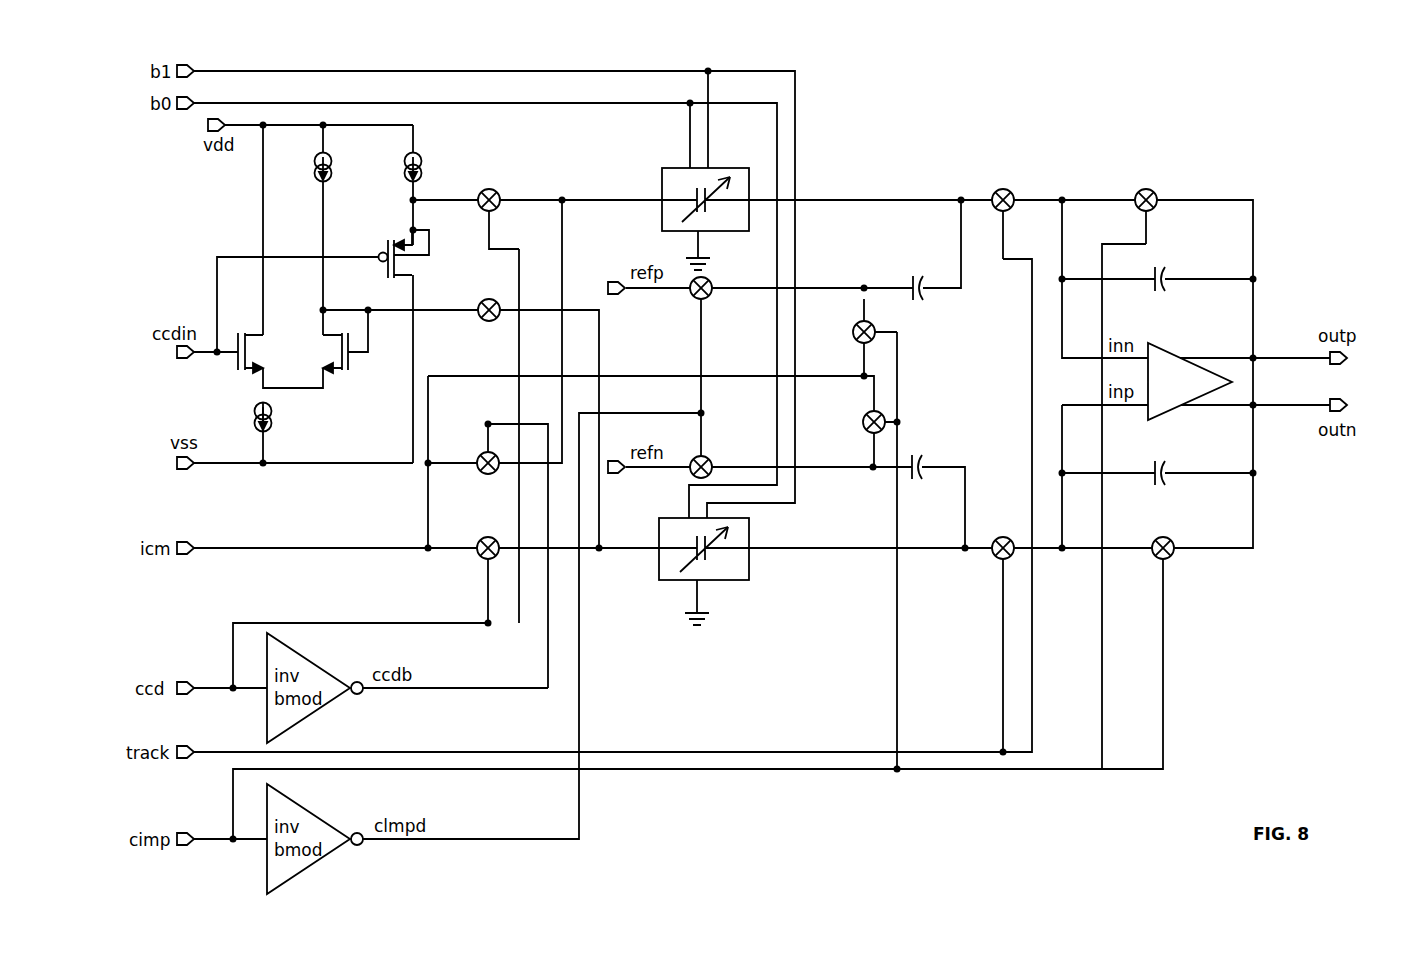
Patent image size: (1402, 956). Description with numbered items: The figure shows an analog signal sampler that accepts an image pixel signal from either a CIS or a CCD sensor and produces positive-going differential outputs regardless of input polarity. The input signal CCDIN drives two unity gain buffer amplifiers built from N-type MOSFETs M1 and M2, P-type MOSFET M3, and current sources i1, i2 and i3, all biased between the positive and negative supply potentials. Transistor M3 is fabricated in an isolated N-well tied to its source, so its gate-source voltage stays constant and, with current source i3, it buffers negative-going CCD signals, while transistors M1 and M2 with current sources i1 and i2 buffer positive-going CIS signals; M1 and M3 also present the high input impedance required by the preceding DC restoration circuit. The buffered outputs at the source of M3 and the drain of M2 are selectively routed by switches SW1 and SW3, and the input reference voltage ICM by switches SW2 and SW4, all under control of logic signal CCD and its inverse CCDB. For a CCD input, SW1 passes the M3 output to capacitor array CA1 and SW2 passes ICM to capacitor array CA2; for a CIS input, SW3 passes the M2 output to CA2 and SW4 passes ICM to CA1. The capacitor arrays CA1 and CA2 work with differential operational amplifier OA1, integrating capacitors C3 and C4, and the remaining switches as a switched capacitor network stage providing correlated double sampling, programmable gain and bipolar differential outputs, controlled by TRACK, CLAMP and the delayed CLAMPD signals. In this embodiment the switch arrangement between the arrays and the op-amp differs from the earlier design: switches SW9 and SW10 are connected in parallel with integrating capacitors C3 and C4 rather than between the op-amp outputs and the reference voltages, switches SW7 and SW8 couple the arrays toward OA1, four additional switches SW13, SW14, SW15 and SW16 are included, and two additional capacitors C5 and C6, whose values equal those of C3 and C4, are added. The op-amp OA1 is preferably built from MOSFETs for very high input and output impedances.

The current source i1 is at (273, 416).
The current source i2 is at (334, 161).
The current source i3 is at (423, 161).
The N-type MOSFET M1 is at (255, 353).
The N-type MOSFET M2 is at (326, 353).
The P-type MOSFET M3 is at (412, 242).
The switch SW1 is at (490, 190).
The switch SW2 is at (486, 539).
The switch SW3 is at (488, 300).
The switch SW4 is at (486, 475).
The switch SW7 is at (1002, 187).
The switch SW8 is at (1000, 537).
The switch SW9 is at (1143, 187).
The switch SW10 is at (1161, 537).
The switch SW13 is at (725, 303).
The switch SW14 is at (839, 322).
The switch SW15 is at (725, 458).
The switch SW16 is at (846, 422).
The capacitor array CA1 is at (711, 206).
The capacitor array CA2 is at (722, 567).
The integrating capacitor C3 is at (1145, 274).
The integrating capacitor C4 is at (1145, 468).
The capacitor C5 is at (915, 273).
The capacitor C6 is at (924, 453).
The differential operational amplifier OA1 is at (1190, 372).